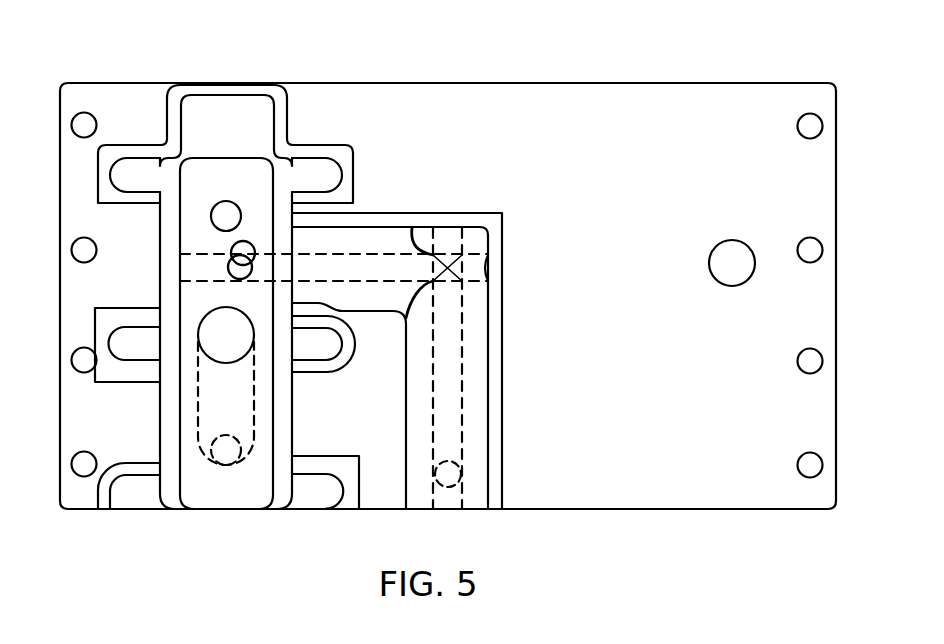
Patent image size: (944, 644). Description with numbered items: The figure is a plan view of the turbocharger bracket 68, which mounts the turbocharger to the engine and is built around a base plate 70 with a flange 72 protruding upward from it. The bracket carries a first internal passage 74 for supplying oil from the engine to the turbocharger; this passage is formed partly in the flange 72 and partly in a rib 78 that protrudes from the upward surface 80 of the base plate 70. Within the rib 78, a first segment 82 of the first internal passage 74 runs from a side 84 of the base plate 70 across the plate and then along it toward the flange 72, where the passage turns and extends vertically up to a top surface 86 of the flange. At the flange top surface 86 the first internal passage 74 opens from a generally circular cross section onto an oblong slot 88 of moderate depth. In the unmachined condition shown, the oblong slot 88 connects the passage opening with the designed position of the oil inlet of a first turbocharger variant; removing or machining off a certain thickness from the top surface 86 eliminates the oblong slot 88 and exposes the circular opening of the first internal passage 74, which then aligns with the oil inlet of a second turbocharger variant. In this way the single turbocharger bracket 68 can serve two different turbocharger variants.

The turbocharger bracket 68 is at (710, 66).
The base plate 70 is at (567, 90).
The flange 72 is at (162, 167).
The first internal passage 74 is at (252, 268).
The rib 78 is at (477, 380).
The upward surface 80 is at (511, 169).
The first segment 82 is at (450, 299).
The side 84 is at (233, 272).
The top surface 86 is at (222, 188).
The oblong slot 88 is at (245, 242).